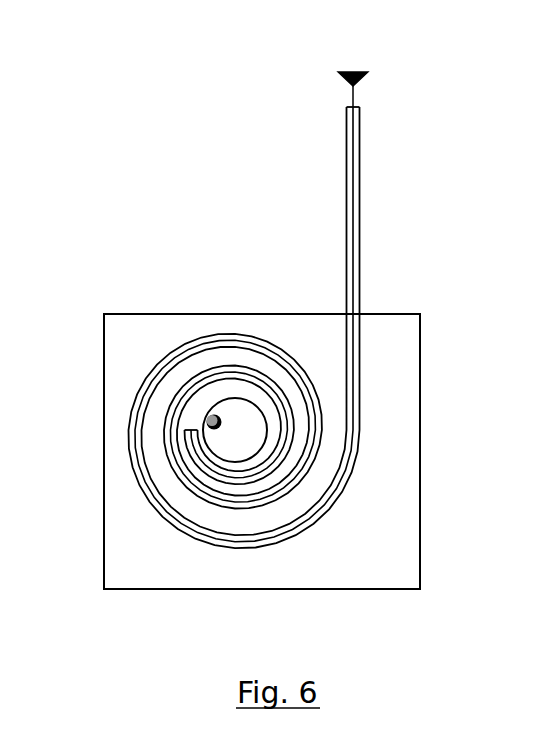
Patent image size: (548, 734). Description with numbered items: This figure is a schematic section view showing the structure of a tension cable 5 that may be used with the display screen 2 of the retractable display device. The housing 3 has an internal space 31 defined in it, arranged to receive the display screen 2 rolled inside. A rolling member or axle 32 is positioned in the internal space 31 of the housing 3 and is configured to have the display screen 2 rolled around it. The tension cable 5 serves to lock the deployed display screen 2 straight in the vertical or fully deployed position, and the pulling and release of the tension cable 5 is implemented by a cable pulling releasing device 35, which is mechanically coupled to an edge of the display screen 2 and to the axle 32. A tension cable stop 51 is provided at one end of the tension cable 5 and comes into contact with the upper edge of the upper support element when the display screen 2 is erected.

The display screen 2 is at (360, 198).
The housing 3 is at (238, 481).
The tension cable 5 is at (353, 102).
The tension cable stop 51 is at (353, 70).
The internal space 31 is at (370, 568).
The axle 32 is at (243, 414).
The cable pulling releasing device 35 is at (210, 418).